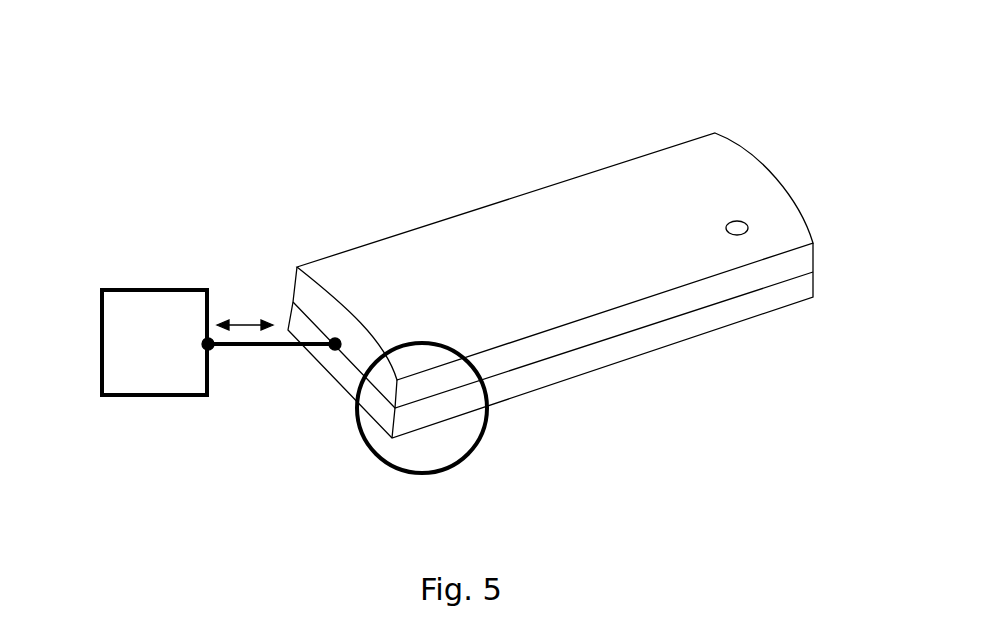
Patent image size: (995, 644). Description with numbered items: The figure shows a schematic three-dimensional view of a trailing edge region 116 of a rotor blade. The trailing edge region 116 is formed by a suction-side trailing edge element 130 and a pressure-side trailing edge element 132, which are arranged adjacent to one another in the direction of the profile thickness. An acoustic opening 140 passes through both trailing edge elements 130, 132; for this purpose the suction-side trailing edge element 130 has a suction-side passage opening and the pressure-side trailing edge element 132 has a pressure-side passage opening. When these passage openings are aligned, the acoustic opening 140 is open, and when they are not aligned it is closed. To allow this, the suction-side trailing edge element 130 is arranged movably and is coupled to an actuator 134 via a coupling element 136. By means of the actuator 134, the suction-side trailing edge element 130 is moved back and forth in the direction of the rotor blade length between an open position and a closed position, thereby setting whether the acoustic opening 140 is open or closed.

The trailing edge region 116 is at (588, 244).
The suction-side trailing edge element 130 is at (772, 210).
The pressure-side trailing edge element 132 is at (632, 345).
The actuator 134 is at (100, 327).
The coupling element 136 is at (248, 370).
The acoustic opening 140 is at (737, 235).